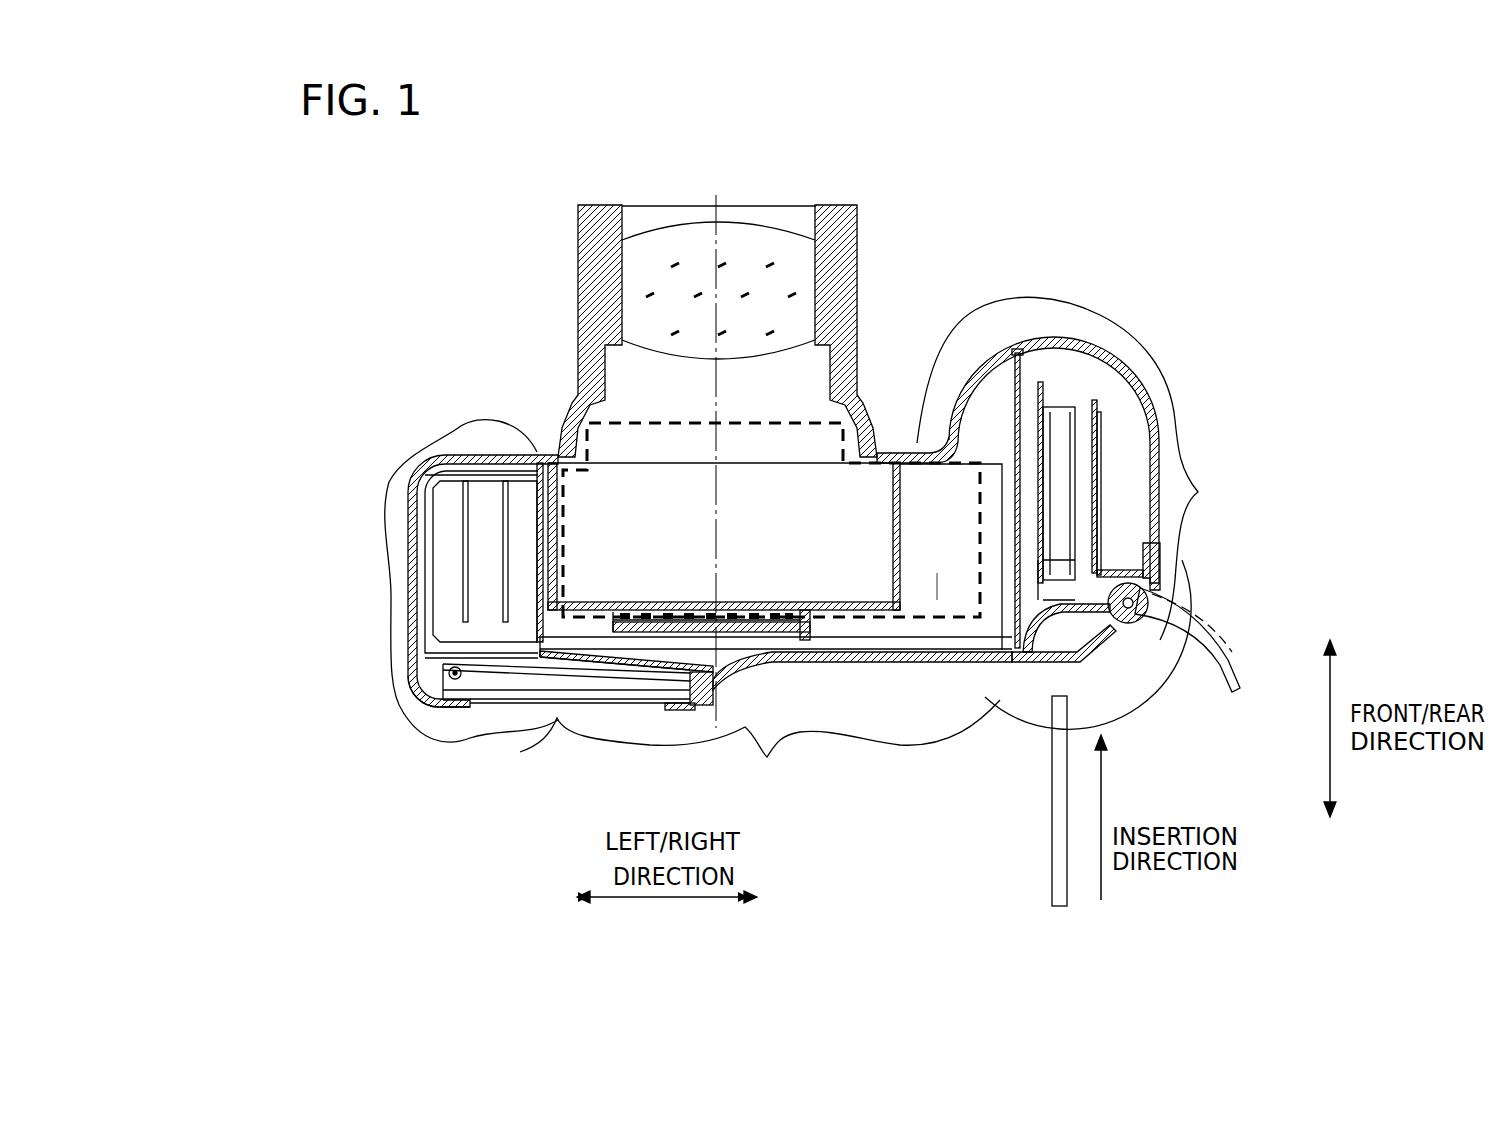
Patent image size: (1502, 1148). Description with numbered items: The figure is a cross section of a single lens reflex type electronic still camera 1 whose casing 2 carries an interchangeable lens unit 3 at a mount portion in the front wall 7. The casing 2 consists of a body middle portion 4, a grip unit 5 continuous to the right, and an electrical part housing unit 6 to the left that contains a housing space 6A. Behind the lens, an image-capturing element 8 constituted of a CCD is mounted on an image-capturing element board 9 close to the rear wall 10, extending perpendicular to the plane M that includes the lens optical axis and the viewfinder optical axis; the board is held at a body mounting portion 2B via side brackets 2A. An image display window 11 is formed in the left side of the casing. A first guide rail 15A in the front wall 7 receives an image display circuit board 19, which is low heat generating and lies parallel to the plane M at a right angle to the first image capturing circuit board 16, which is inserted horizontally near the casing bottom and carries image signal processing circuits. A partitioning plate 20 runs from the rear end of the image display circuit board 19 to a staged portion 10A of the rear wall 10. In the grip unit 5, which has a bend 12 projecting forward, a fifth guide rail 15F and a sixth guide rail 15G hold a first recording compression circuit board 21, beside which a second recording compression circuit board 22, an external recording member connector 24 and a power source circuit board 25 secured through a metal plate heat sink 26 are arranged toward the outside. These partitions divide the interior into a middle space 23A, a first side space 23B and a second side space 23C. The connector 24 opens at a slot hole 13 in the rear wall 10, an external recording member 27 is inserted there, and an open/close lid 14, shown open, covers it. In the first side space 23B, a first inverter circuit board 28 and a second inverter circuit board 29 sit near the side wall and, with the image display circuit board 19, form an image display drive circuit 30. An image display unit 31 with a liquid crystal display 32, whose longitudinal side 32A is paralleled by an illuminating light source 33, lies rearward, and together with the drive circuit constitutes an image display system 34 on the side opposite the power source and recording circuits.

The single lens reflex type electronic still camera 1 is at (1119, 237).
The casing 2 is at (429, 466).
The side brackets 2A is at (600, 605).
The body mounting portion 2B is at (562, 523).
The interchangeable lens unit 3 is at (857, 210).
The body middle portion 4 is at (760, 751).
The grip unit 5 is at (1078, 513).
The electrical part housing unit 6 is at (388, 565).
The housing space 6A is at (492, 468).
The front wall 7 is at (862, 466).
The image-capturing element 8 is at (744, 606).
The image-capturing element board 9 is at (774, 617).
The rear wall 10 is at (817, 660).
The staged portion 10A is at (716, 690).
The image display window 11 is at (690, 708).
The bend 12 is at (1043, 390).
The slot hole 13 is at (1060, 607).
The open/close lid 14 is at (1225, 652).
The first guide rail 15A is at (516, 470).
The fifth guide rail 15F is at (1013, 443).
The sixth guide rail 15G is at (990, 633).
The first image capturing circuit board 16 is at (855, 662).
The image display circuit board 19 is at (473, 512).
The partitioning plate 20 is at (579, 693).
The first recording compression circuit board 21 is at (917, 443).
The second recording compression circuit board 22 is at (1122, 360).
The middle space 23A is at (937, 573).
The first side space 23B is at (425, 660).
The second side space 23C is at (1130, 488).
The external recording member connector 24 is at (1076, 437).
The power source circuit board 25 is at (1083, 522).
The metal plate heat sink 26 is at (1100, 557).
The external recording member 27 is at (1050, 840).
The first inverter circuit board 28 is at (427, 512).
The second inverter circuit board 29 is at (462, 567).
The image display drive circuit 30 is at (533, 583).
The image display unit 31 is at (490, 678).
The liquid crystal display 32 is at (510, 676).
The longitudinal side 32A is at (447, 675).
The illuminating light source 33 is at (437, 662).
The image display system 34 is at (637, 665).
The plane M is at (700, 566).